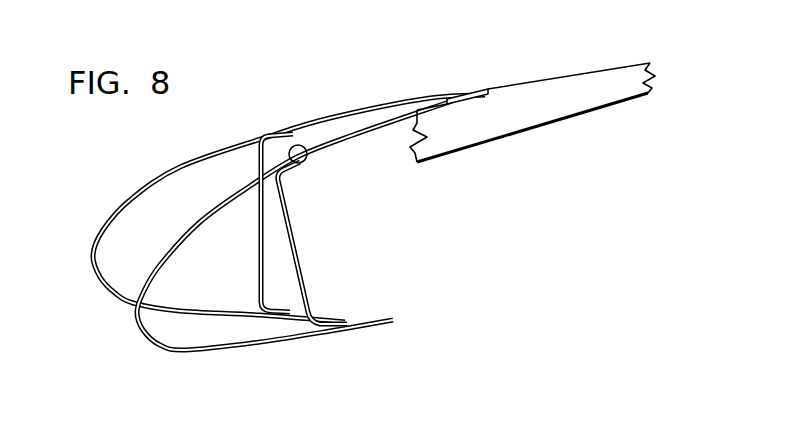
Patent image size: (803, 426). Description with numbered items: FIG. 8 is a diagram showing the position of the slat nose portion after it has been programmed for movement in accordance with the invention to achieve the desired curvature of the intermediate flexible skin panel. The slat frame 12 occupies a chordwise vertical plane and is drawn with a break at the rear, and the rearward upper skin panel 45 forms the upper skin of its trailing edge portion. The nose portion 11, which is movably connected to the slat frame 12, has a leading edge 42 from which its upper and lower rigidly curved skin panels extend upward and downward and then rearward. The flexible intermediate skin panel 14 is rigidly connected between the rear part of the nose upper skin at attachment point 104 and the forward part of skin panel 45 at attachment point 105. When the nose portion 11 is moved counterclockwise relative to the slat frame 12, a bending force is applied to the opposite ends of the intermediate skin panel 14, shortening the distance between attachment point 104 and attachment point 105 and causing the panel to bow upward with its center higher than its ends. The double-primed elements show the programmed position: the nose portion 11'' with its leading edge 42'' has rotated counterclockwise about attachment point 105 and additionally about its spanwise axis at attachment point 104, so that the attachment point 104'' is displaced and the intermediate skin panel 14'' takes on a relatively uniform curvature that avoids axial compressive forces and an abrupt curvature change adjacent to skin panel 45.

The nose portion 11 is at (198, 153).
The leading edge 42 is at (187, 261).
The intermediate skin panel 14 is at (376, 99).
The nose portion (programmed position) 11'' is at (150, 263).
The leading edge (programmed position) 42'' is at (229, 339).
The intermediate skin panel (programmed position) 14'' is at (351, 148).
The attachment point 104 is at (292, 194).
The attachment point (programmed position) 104'' is at (329, 234).
The attachment point 105 is at (467, 91).
The slat frame 12 is at (557, 82).
The rearward upper skin panel 45 is at (613, 63).